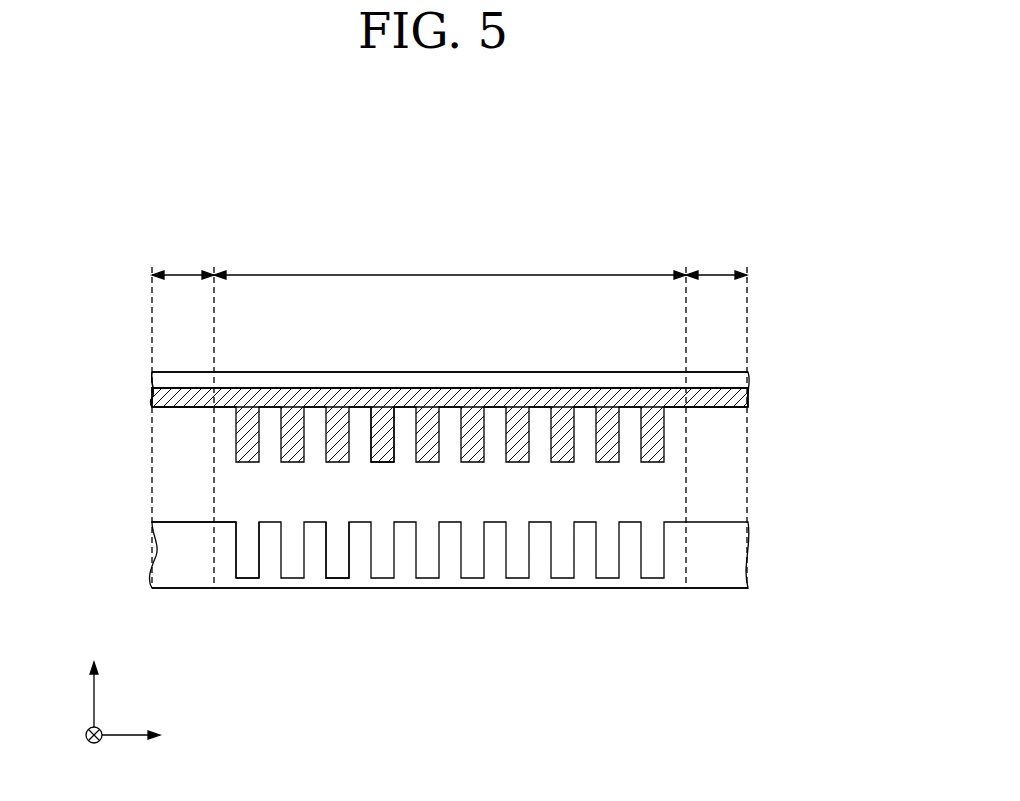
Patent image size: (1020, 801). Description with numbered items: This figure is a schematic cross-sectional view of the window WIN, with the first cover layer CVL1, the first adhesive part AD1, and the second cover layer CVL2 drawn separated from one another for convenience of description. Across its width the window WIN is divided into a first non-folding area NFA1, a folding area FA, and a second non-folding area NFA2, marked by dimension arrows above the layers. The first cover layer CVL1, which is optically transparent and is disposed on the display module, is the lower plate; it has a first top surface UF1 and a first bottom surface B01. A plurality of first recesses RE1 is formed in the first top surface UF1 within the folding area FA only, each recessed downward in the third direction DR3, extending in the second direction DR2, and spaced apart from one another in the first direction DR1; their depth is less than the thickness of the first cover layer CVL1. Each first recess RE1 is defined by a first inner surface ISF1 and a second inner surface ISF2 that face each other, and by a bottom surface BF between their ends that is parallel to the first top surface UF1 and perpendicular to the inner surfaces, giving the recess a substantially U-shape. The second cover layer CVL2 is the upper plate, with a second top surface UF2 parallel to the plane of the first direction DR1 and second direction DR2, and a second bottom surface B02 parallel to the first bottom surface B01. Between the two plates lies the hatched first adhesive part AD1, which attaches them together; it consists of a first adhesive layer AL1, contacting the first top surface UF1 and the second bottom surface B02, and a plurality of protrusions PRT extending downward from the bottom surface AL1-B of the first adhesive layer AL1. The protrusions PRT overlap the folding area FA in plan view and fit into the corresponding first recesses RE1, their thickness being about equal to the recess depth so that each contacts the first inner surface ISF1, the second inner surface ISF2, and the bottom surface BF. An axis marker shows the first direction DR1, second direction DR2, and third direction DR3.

The window WIN is at (650, 208).
The first non-folding area NFA1 is at (183, 261).
The folding area FA is at (450, 261).
The second non-folding area NFA2 is at (716, 261).
The second cover layer CVL2 is at (738, 381).
The second top surface UF2 is at (173, 373).
The second bottom surface B02 is at (153, 399).
The first adhesive part AD1 is at (738, 398).
The first adhesive layer AL1 is at (452, 398).
The bottom surface of the first adhesive layer AL1-B is at (173, 407).
The protrusions PRT is at (383, 435).
The first cover layer CVL1 is at (738, 556).
The first top surface UF1 is at (173, 522).
The first bottom surface B01 is at (173, 589).
The first inner surface ISF1 is at (238, 538).
The second inner surface ISF2 is at (258, 538).
The bottom surface BF is at (245, 578).
The first recess RE1 is at (344, 563).
The first direction DR1 is at (153, 738).
The second direction DR2 is at (96, 749).
The third direction DR3 is at (96, 683).